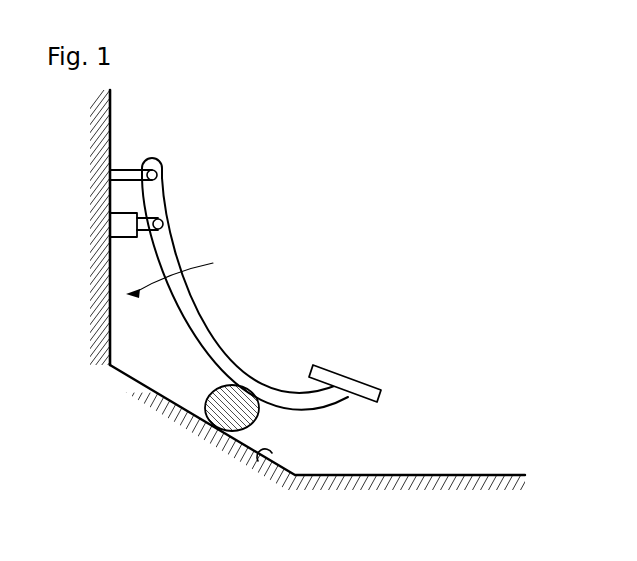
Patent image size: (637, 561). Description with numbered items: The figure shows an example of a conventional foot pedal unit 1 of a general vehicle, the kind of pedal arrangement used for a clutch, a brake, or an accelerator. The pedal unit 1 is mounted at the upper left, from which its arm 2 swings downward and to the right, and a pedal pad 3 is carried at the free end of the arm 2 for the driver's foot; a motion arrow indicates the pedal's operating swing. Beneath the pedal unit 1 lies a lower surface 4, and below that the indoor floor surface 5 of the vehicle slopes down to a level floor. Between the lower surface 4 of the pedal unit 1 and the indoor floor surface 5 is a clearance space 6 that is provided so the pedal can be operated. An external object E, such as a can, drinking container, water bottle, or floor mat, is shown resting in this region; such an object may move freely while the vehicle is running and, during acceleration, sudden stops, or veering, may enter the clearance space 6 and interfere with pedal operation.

The foot pedal unit 1 is at (299, 316).
The curved arm 2 is at (200, 331).
The paddle plate 3 is at (367, 385).
The lower surface 4 is at (176, 310).
The indoor floor surface 5 is at (258, 458).
The clearance space 6 is at (325, 437).
The external object E is at (220, 407).